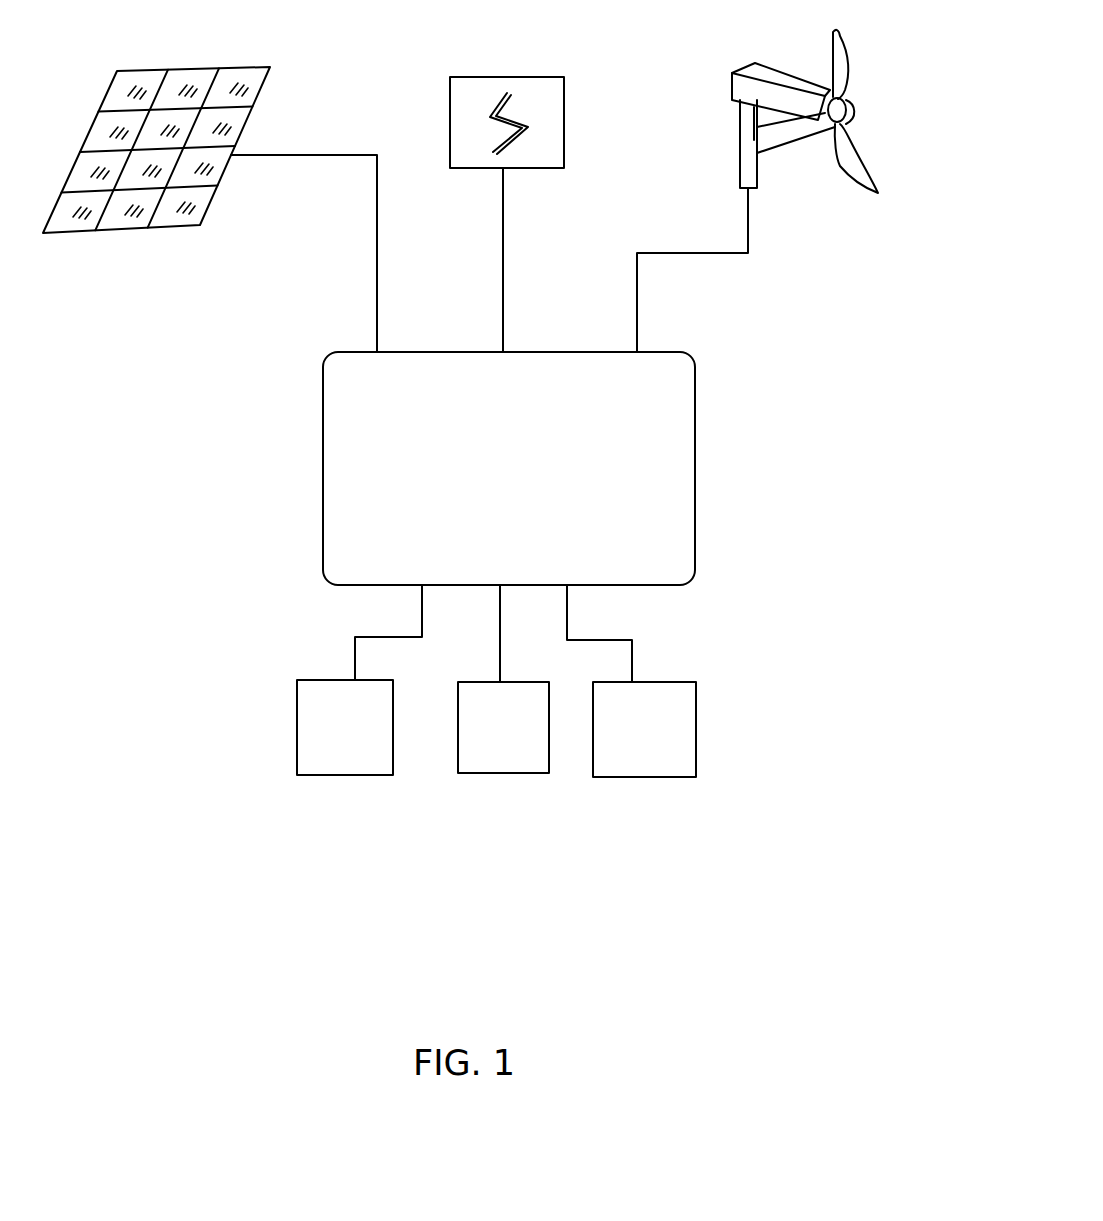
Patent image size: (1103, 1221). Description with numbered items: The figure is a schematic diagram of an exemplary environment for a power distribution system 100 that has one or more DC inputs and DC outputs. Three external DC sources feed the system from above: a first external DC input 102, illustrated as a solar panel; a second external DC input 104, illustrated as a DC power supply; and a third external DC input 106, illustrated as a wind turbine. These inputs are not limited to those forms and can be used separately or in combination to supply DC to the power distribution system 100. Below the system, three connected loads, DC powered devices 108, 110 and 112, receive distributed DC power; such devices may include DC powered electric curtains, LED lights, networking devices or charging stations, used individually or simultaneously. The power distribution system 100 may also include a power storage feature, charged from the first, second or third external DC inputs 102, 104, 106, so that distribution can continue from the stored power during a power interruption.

The power distribution system 100 is at (323, 462).
The first external DC input 102 is at (143, 235).
The second external DC input 104 is at (450, 92).
The third external DC input 106 is at (740, 108).
The DC powered device 108 is at (340, 777).
The DC powered device 110 is at (510, 777).
The DC powered device 112 is at (650, 777).